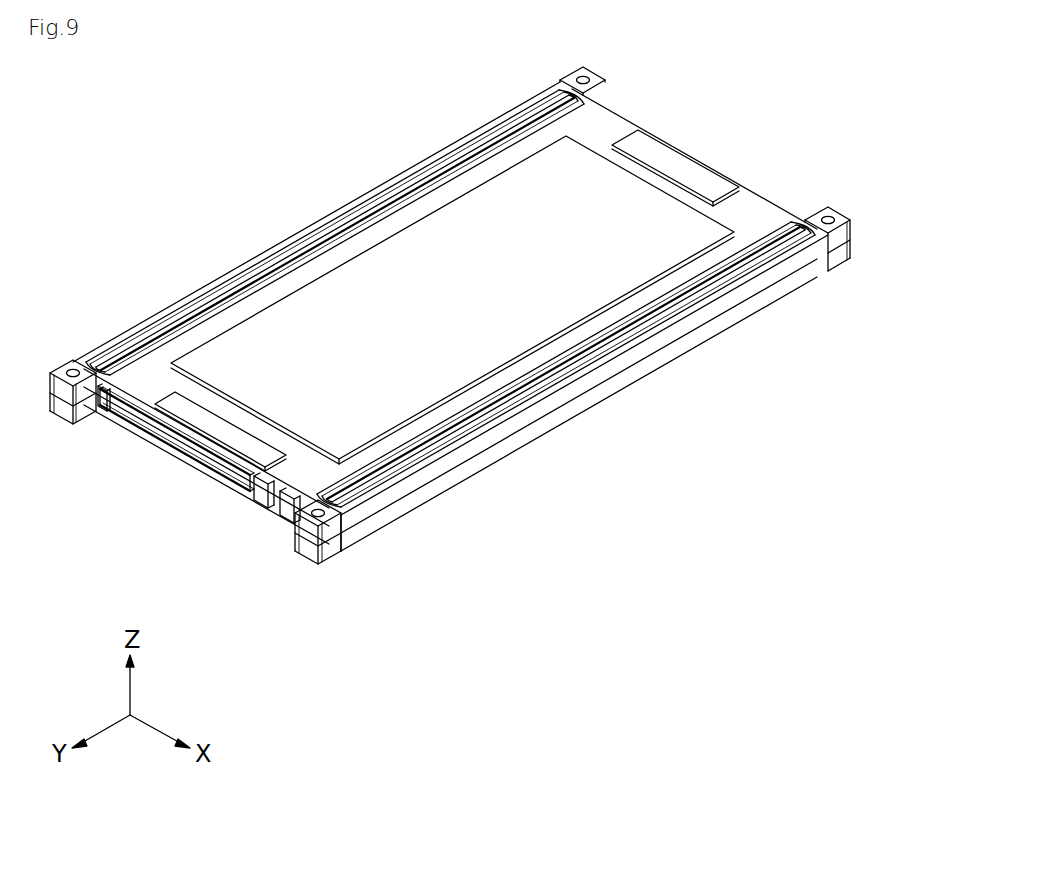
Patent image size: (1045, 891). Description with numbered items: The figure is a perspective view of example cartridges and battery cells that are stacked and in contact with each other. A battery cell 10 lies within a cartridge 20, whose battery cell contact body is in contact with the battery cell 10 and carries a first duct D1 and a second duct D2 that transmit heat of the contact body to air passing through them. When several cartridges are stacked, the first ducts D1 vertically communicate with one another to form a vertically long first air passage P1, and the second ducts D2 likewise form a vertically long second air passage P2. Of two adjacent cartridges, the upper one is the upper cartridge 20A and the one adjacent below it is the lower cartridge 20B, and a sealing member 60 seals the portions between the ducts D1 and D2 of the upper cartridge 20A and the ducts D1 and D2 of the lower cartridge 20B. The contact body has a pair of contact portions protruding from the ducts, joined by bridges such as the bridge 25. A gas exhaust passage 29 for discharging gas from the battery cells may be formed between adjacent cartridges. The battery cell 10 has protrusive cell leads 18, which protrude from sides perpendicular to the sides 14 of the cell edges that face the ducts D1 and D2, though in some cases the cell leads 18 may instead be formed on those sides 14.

The battery cell 10 is at (583, 168).
The side 14 is at (307, 545).
The cell lead 18 is at (703, 157).
The cartridge 20 is at (512, 316).
The upper cartridge 20A is at (840, 232).
The lower cartridge 20B is at (842, 248).
The bridge 25 is at (262, 497).
The gas exhaust passage 29 is at (133, 413).
The sealing member 60 is at (80, 362).
The first duct D1 is at (380, 207).
The second duct D2 is at (755, 283).
The first air passage P1 is at (256, 284).
The second air passage P2 is at (565, 371).